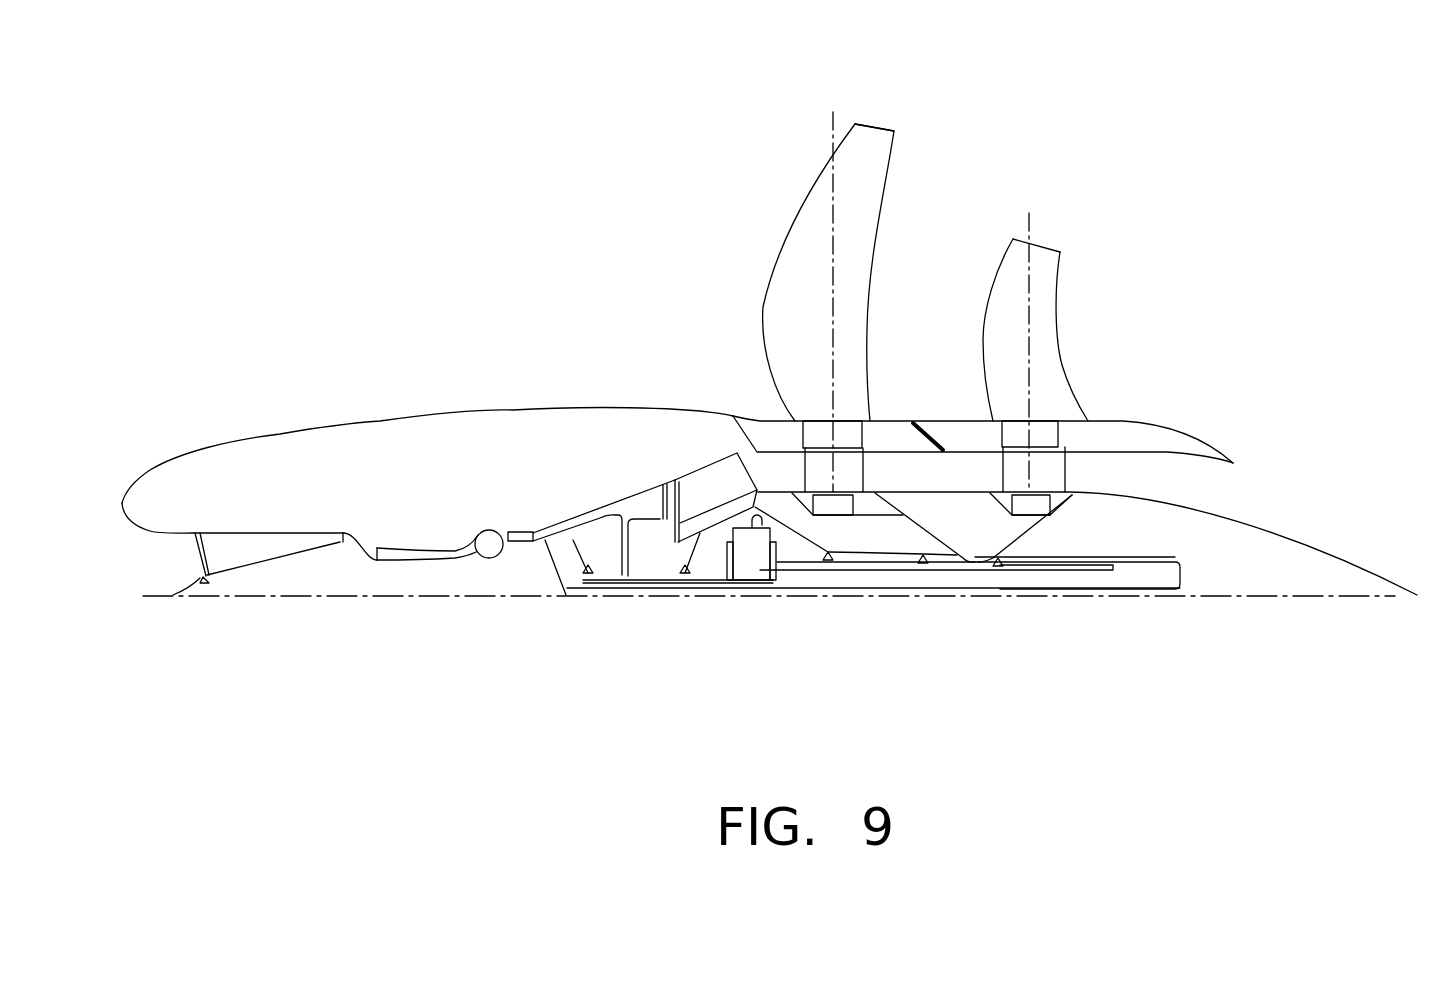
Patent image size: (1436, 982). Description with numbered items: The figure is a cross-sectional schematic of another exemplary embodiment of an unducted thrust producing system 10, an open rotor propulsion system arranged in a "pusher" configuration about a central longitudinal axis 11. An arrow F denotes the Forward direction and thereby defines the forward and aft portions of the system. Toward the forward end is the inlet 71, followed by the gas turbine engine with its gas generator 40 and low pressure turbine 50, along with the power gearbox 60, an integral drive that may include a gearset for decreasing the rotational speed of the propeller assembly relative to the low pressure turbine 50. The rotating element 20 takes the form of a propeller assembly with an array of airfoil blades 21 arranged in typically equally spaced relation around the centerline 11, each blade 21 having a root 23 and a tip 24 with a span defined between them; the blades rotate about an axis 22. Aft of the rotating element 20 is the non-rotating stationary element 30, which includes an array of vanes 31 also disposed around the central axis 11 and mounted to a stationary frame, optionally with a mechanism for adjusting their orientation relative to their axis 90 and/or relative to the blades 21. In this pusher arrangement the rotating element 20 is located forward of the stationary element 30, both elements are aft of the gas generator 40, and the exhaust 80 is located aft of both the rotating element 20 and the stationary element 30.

The unducted thrust producing system 10 is at (347, 150).
The central longitudinal axis 11 is at (365, 598).
The rotating element 20 is at (630, 165).
The airfoil blades 21 is at (775, 262).
The first wing rotation axis 22 is at (832, 128).
The root 23 is at (805, 433).
The tip 24 is at (875, 124).
The stationary element 30 is at (1198, 351).
The vanes 31 is at (1060, 338).
The gas generator 40 is at (304, 500).
The low pressure turbine 50 is at (633, 498).
The power gearbox 60 is at (756, 582).
The inlet 71 is at (190, 558).
The exhaust 80 is at (1262, 488).
The axis 90 is at (1033, 226).
The Forward direction F is at (352, 267).